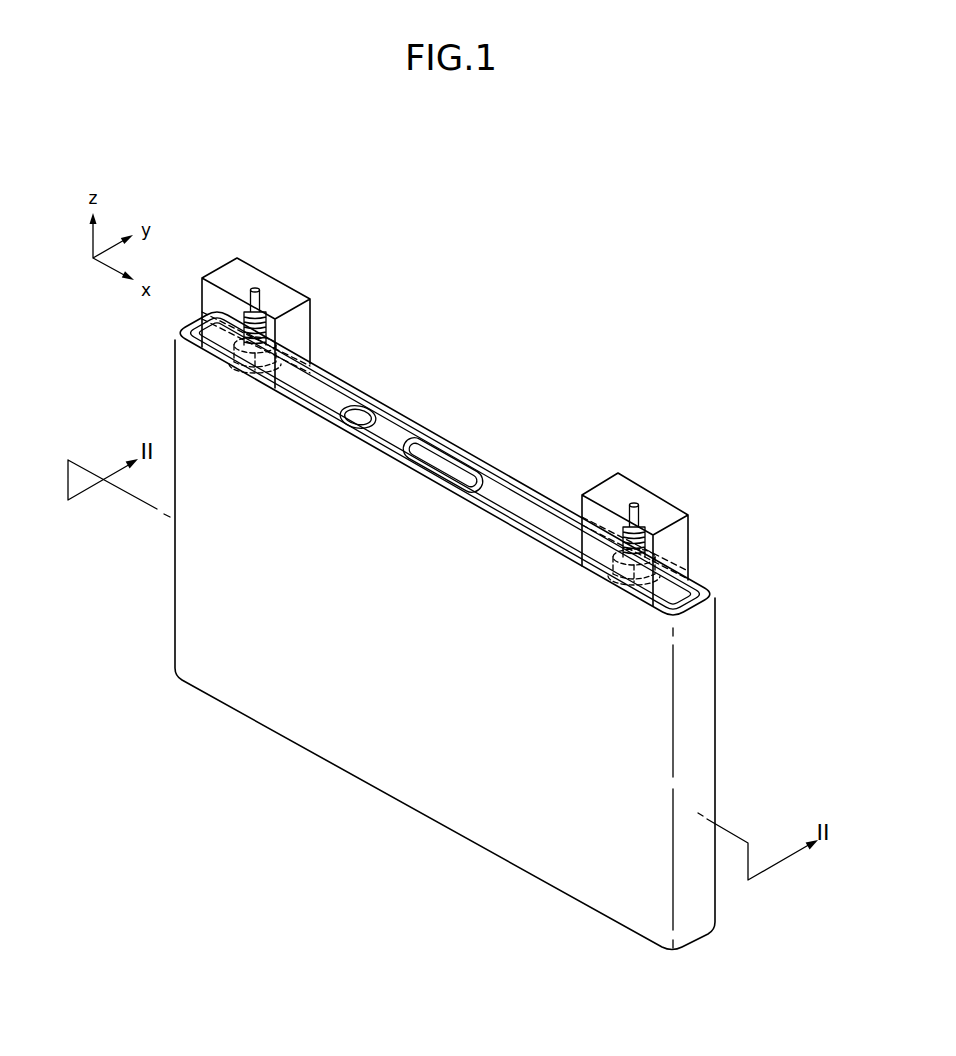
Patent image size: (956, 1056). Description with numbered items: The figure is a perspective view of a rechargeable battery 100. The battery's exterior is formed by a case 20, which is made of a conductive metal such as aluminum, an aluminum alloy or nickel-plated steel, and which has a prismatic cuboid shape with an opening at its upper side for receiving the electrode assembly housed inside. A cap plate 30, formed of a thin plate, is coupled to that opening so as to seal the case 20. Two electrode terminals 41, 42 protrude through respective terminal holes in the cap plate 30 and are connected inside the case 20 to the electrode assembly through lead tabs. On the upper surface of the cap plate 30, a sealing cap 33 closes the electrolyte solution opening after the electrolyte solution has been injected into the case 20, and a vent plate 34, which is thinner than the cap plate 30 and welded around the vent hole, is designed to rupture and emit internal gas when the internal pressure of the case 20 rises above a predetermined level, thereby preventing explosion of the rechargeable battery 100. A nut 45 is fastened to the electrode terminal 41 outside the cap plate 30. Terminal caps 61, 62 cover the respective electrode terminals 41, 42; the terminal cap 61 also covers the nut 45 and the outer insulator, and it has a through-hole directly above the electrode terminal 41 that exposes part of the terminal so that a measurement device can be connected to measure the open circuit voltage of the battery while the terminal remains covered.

The rechargeable battery 100 is at (595, 374).
The case 20 is at (423, 797).
The cap plate 30 is at (397, 433).
The sealing cap 33 is at (362, 414).
The vent plate 34 is at (445, 465).
The electrode terminal 41 is at (260, 318).
The electrode terminal 42 is at (631, 528).
The nut 45 is at (273, 353).
The terminal cap 61 is at (249, 277).
The terminal cap 62 is at (665, 512).